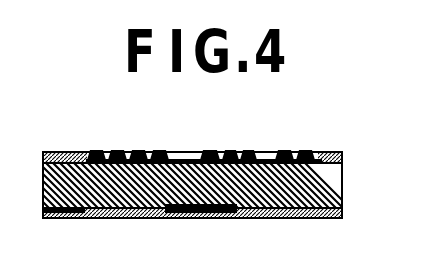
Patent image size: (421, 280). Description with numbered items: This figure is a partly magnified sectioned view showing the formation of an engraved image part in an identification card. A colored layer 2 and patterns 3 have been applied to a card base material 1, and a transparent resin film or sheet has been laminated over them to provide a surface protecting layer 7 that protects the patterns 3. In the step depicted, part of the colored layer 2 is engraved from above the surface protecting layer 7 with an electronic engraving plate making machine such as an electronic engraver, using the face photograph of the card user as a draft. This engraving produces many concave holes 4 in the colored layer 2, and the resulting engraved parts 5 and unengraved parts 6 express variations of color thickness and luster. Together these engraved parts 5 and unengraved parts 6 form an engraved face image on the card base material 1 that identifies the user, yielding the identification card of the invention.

The card base material 1 is at (270, 190).
The colored layer 2 is at (97, 150).
The patterns 3 is at (207, 217).
The concave holes 4 is at (187, 153).
The engraved parts 5 is at (260, 159).
The unengraved parts 6 is at (305, 151).
The surface protecting layer 7 is at (58, 151).